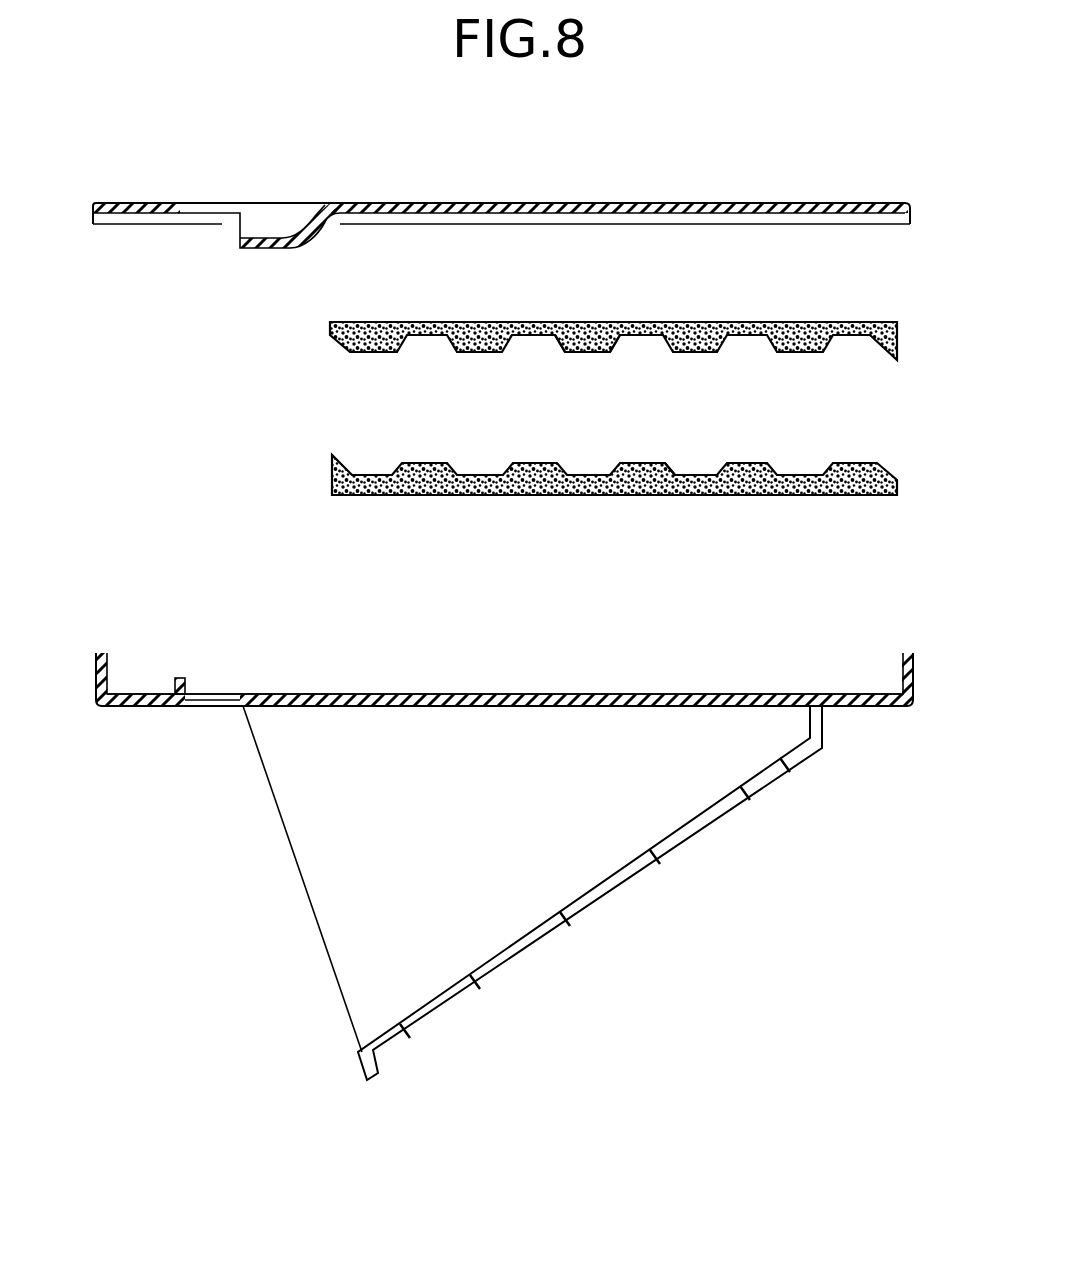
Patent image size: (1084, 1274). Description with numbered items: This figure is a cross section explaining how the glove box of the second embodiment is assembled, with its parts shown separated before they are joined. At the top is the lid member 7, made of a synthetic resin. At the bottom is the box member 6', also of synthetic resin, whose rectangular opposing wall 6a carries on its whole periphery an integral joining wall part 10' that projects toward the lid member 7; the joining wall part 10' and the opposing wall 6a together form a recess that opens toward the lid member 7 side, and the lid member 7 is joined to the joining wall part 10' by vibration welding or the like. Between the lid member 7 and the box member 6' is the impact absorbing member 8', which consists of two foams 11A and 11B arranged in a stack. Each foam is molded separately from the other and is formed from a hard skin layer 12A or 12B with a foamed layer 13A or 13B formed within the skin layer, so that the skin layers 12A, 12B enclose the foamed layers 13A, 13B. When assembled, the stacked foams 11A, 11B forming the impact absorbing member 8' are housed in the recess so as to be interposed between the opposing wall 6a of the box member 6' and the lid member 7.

The lid member 7 is at (571, 207).
The impact absorbing member 8' is at (482, 414).
The foam 11B is at (514, 300).
The foam 11A is at (514, 521).
The skin layer 12B is at (635, 322).
The foamed layer 13B is at (583, 322).
The skin layer 12A is at (660, 496).
The foamed layer 13A is at (530, 496).
The joining wall part 10' is at (521, 682).
The opposing wall 6a is at (486, 707).
The box member 6' is at (532, 893).